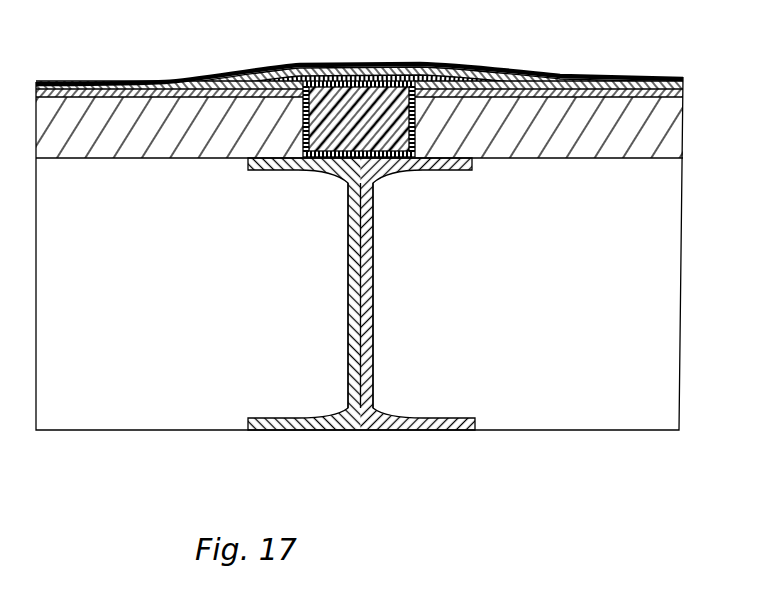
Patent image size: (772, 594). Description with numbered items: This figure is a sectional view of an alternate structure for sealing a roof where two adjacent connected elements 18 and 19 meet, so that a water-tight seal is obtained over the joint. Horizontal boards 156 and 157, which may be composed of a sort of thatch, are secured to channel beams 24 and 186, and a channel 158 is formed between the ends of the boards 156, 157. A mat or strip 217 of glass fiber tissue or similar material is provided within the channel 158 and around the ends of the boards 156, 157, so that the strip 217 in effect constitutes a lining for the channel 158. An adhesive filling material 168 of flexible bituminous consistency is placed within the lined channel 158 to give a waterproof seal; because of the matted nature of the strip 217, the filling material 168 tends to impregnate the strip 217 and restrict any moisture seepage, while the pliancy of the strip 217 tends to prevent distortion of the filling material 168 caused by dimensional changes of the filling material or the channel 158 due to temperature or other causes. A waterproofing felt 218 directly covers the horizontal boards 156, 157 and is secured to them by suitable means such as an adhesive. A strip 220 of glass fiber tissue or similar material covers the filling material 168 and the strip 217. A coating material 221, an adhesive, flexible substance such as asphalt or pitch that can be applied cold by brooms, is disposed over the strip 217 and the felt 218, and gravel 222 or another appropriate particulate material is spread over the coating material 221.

The connected element 18 is at (540, 435).
The connected element 19 is at (150, 432).
The channel beam 24 is at (361, 294).
The horizontal board 156 is at (606, 158).
The horizontal board 157 is at (137, 160).
The channel 158 is at (306, 128).
The adhesive filling material 168 is at (328, 172).
The channel beam 186 is at (350, 310).
The strip of glass fiber tissue 217 is at (414, 128).
The waterproofing felt 218 is at (653, 76).
The strip of glass fiber tissue 220 is at (295, 62).
The coating material 221 is at (415, 42).
The gravel 222 is at (512, 66).